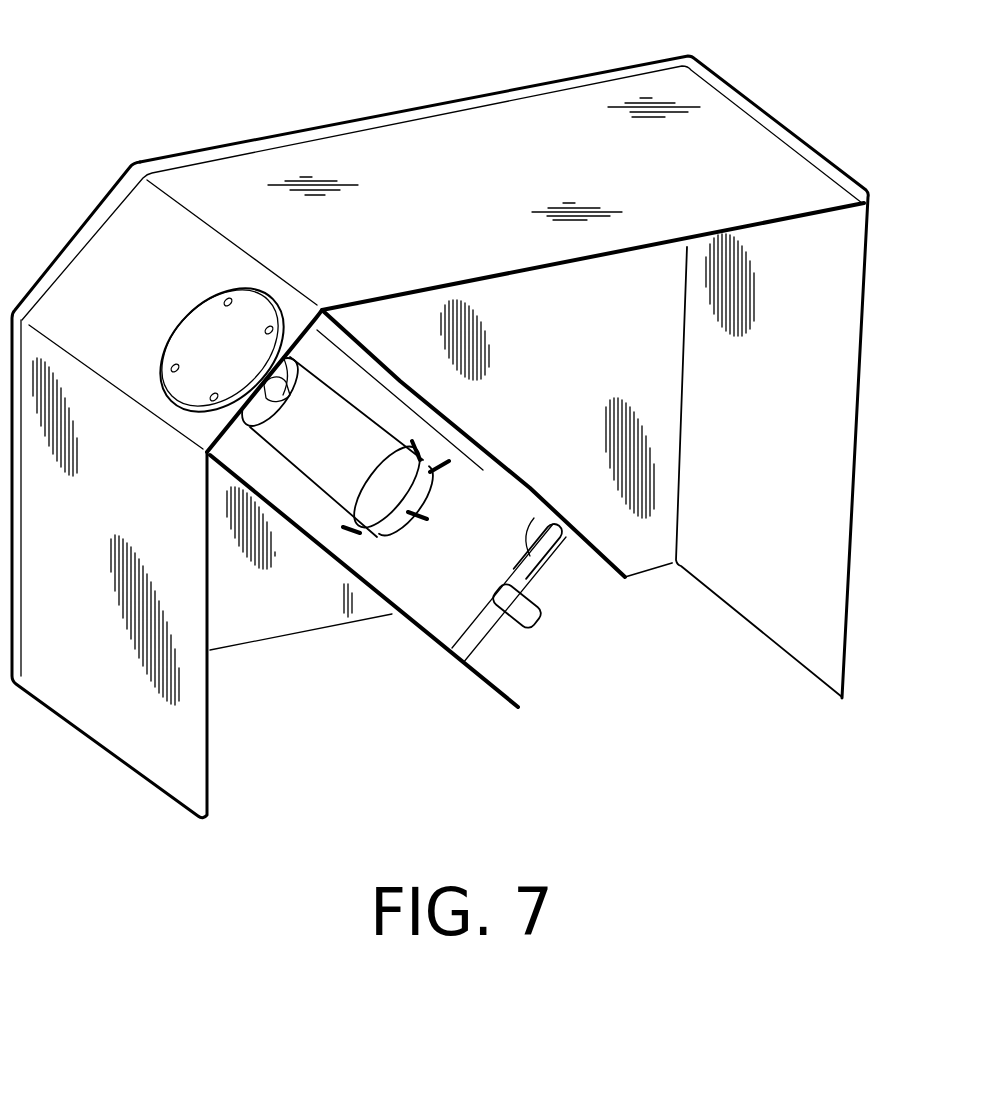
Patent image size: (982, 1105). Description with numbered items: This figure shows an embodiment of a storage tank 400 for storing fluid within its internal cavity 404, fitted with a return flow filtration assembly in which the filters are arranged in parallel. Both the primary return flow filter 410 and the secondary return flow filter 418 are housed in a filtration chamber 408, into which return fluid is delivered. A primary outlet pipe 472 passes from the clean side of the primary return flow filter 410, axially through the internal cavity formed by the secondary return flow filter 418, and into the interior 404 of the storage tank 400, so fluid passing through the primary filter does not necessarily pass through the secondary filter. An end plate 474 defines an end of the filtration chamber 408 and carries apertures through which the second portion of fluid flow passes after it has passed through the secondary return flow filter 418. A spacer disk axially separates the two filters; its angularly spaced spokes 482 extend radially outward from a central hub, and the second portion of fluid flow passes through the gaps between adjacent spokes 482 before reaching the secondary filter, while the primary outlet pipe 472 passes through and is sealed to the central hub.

The storage tank 400 is at (200, 85).
The internal cavity 404 is at (606, 358).
The filtration chamber 408 is at (325, 523).
The primary return flow filter 410 is at (347, 487).
The secondary return flow filter 418 is at (445, 568).
The primary outlet pipe 472 is at (523, 608).
The end plate 474 is at (527, 588).
The spokes 482 is at (392, 535).